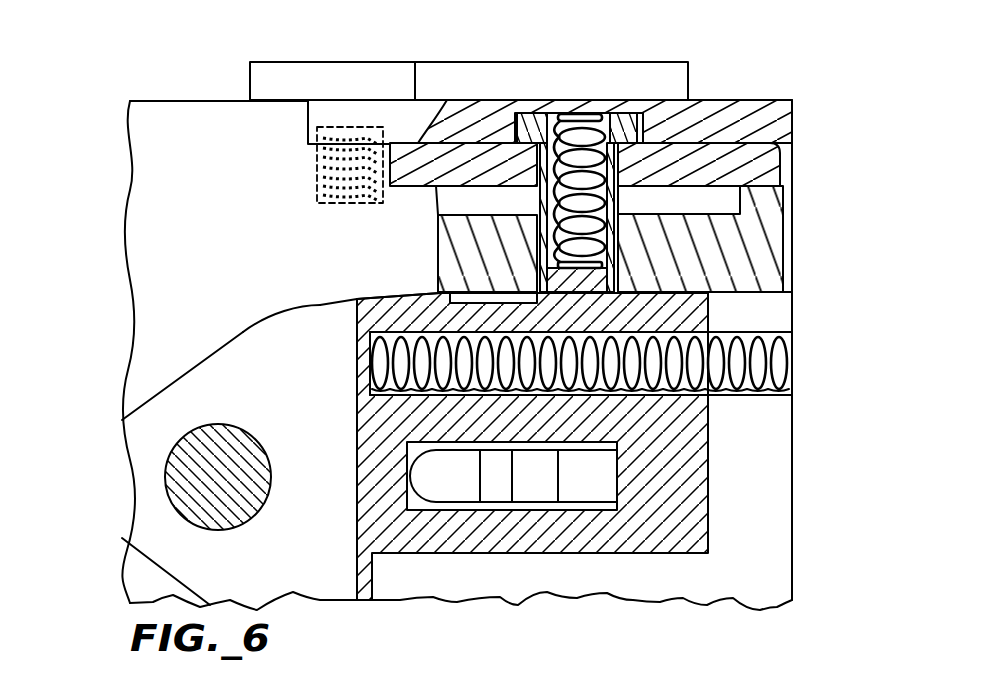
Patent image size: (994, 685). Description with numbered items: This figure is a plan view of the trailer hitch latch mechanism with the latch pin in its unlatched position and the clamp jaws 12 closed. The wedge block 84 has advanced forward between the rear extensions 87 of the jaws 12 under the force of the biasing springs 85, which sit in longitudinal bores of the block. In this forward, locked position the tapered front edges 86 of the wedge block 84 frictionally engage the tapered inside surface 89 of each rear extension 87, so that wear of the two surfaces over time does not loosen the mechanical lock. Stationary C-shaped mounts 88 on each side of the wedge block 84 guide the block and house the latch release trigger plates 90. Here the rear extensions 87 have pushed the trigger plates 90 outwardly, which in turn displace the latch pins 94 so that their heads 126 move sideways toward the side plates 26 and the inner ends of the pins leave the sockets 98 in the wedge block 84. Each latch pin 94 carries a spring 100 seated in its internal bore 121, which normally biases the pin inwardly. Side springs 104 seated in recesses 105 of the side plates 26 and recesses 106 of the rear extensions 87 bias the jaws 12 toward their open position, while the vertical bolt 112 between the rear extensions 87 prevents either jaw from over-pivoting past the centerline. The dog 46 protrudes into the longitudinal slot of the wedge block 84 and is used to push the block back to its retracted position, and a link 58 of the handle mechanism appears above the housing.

The clamp jaws 12 is at (160, 283).
The side plates 26 is at (497, 110).
The dog 46 is at (527, 478).
The link 58 is at (557, 60).
The wedge block 84 is at (690, 457).
The biasing springs 85 is at (790, 350).
The tapered front edges 86 is at (398, 297).
The rear extensions 87 is at (320, 283).
The C-shaped mounts 88 is at (763, 207).
The tapered inside surface 89 is at (345, 307).
The latch release trigger plate 90 is at (460, 163).
The latch pin 94 is at (614, 258).
The sockets 98 is at (610, 292).
The springs 100 is at (620, 238).
The side springs 104 is at (317, 167).
The recesses 105 is at (330, 127).
The recesses 106 is at (327, 203).
The vertical bolt 112 is at (190, 503).
The internal bore 121 is at (540, 204).
The heads 126 is at (620, 117).